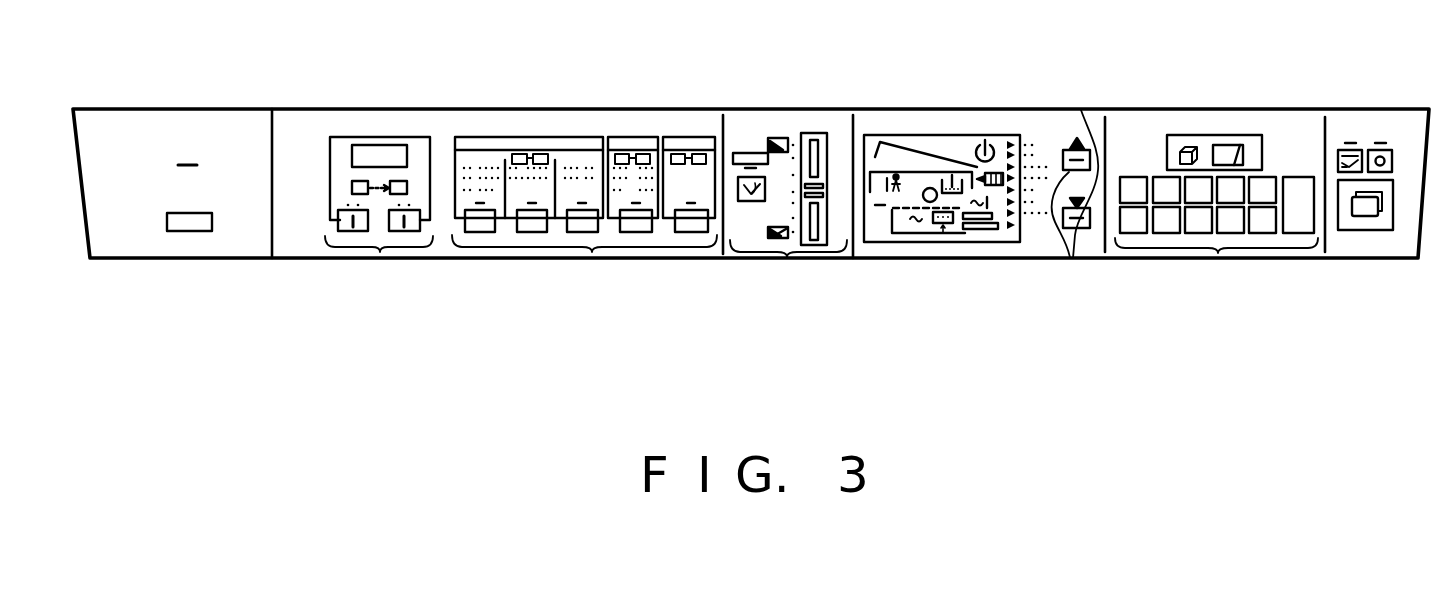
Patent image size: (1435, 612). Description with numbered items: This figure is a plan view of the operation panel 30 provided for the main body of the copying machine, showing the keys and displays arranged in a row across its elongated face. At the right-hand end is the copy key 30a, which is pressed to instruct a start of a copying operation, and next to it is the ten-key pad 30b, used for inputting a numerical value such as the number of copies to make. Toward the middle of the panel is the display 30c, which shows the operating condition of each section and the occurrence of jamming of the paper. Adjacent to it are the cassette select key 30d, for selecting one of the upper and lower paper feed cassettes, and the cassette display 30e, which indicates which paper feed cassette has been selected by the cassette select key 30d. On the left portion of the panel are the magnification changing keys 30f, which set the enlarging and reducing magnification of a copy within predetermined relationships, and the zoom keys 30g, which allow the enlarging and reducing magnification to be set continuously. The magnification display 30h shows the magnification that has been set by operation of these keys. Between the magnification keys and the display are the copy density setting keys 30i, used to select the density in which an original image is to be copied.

The operation panel 30 is at (793, 109).
The copy key 30a is at (1371, 231).
The ten-key pad 30b is at (1218, 253).
The display 30c is at (933, 243).
The cassette select key 30d is at (1072, 258).
The cassette display 30e is at (1077, 138).
The magnification changing keys 30f is at (592, 252).
The zoom keys 30g is at (380, 252).
The magnification display 30h is at (387, 143).
The copy density setting keys 30i is at (787, 257).